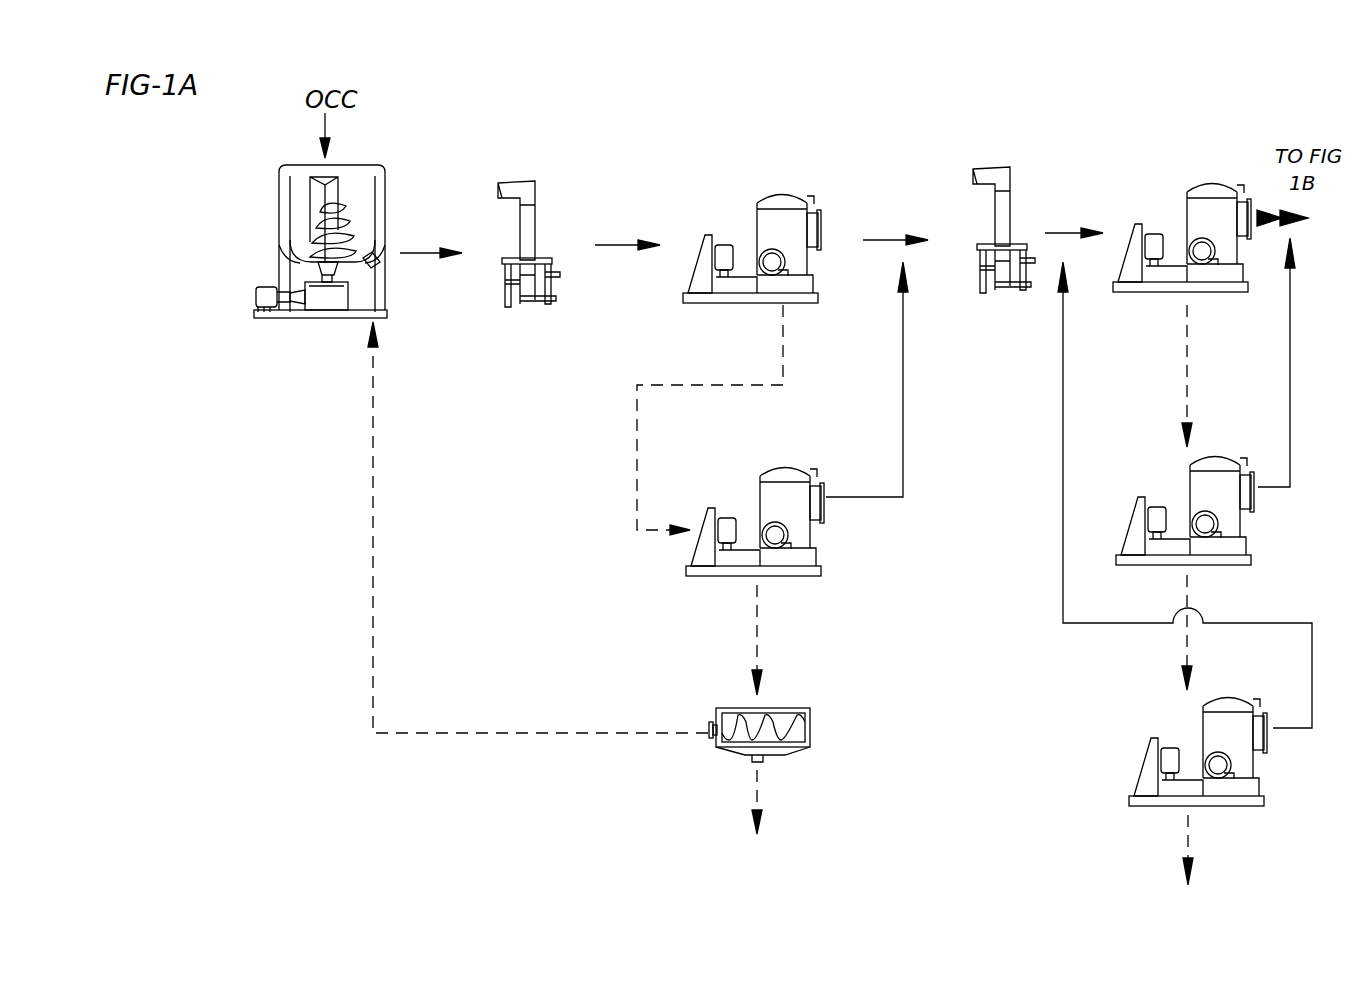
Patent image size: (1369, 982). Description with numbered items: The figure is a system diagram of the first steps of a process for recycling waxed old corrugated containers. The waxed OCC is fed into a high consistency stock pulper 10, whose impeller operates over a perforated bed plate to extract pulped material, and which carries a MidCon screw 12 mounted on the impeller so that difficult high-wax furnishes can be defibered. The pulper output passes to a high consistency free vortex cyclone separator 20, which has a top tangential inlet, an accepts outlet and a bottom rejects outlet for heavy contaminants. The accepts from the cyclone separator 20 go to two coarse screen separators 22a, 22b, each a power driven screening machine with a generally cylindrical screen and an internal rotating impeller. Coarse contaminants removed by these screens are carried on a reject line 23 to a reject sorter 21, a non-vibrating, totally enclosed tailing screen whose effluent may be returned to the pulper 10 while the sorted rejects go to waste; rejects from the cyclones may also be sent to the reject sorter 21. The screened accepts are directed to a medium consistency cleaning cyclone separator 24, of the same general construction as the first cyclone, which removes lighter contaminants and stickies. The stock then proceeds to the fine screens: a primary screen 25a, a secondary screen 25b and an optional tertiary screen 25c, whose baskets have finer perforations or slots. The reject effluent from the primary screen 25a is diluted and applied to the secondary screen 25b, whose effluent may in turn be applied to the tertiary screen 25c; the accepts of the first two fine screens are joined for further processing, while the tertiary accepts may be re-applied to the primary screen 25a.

The high consistency stock pulper 10 is at (384, 213).
The MidCon screw 12 is at (347, 219).
The high consistency free vortex cyclone separator 20 is at (540, 232).
The reject sorter 21 is at (812, 720).
The coarse screen separator 22a is at (764, 200).
The coarse screen separator 22b is at (757, 502).
The reject line 23 is at (757, 636).
The medium consistency cleaning cyclone separator 24 is at (1013, 212).
The primary fine screen 25a is at (1185, 208).
The secondary fine screen 25b is at (1190, 480).
The tertiary fine screen 25c is at (1262, 750).